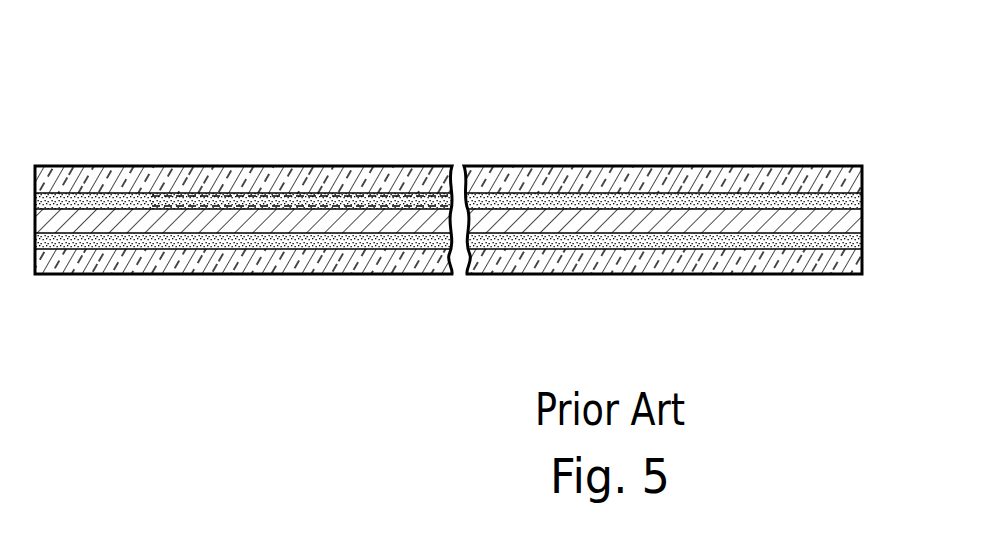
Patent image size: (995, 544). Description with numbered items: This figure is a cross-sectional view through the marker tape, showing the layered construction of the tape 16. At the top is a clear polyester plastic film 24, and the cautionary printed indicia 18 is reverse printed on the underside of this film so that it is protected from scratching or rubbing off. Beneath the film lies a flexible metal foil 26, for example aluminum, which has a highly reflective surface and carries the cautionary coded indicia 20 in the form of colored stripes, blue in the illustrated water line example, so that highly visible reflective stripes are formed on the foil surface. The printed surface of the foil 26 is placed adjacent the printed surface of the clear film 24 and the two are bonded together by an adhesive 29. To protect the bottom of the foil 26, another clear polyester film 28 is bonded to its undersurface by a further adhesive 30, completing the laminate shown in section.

The tape 16 is at (584, 124).
The cautionary printed indicia 18 is at (236, 194).
The cautionary coded indicia 20 is at (303, 212).
The clear polyester plastic film 24 is at (320, 167).
The flexible metal foil 26 is at (753, 218).
The bottom cover layer 28 is at (172, 262).
The adhesive 29 is at (80, 195).
The adhesive 30 is at (343, 242).